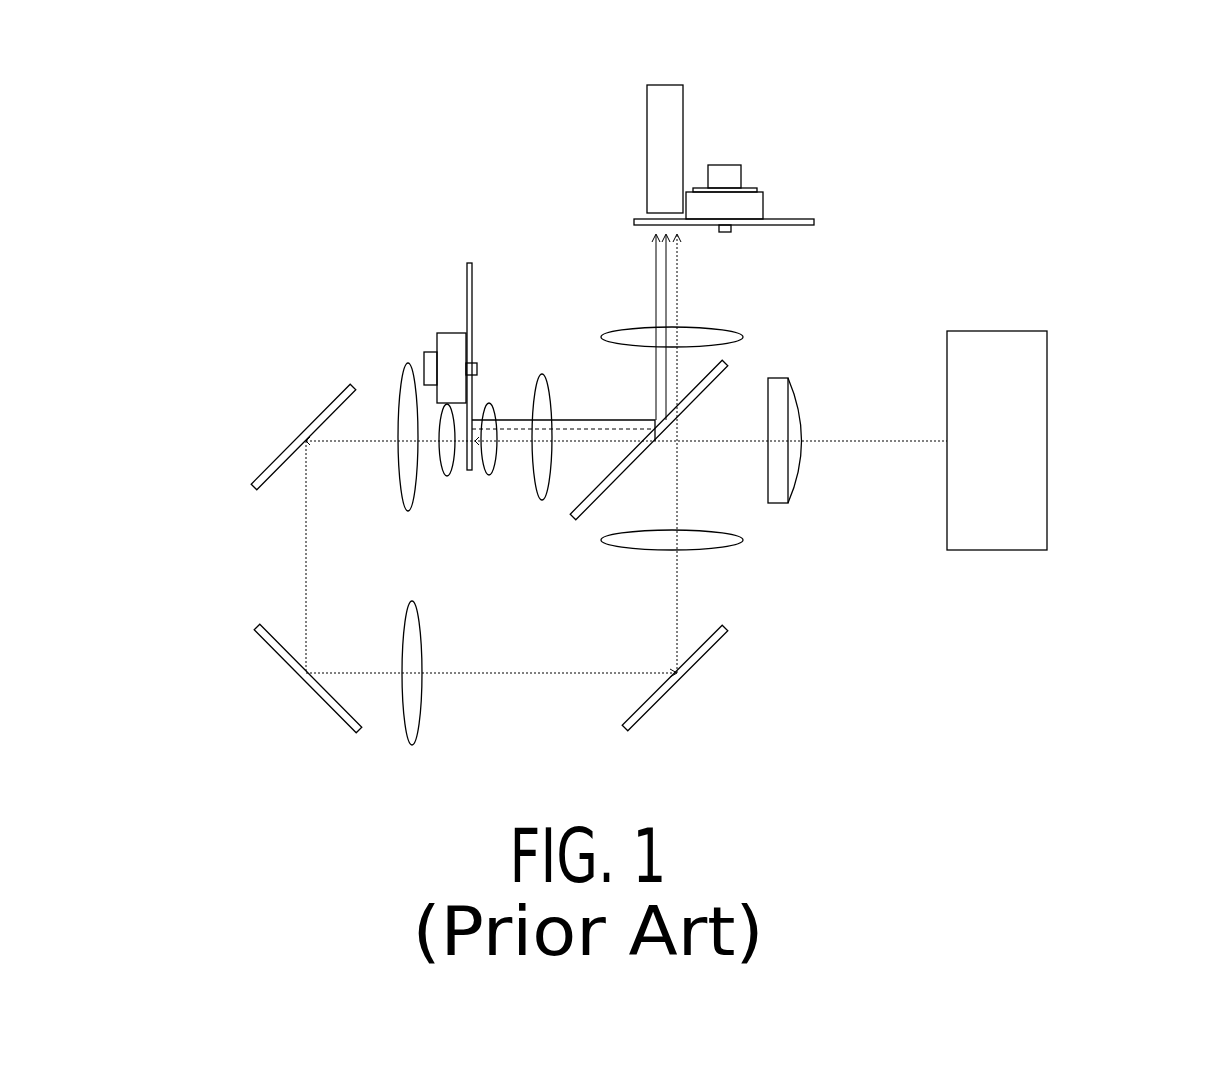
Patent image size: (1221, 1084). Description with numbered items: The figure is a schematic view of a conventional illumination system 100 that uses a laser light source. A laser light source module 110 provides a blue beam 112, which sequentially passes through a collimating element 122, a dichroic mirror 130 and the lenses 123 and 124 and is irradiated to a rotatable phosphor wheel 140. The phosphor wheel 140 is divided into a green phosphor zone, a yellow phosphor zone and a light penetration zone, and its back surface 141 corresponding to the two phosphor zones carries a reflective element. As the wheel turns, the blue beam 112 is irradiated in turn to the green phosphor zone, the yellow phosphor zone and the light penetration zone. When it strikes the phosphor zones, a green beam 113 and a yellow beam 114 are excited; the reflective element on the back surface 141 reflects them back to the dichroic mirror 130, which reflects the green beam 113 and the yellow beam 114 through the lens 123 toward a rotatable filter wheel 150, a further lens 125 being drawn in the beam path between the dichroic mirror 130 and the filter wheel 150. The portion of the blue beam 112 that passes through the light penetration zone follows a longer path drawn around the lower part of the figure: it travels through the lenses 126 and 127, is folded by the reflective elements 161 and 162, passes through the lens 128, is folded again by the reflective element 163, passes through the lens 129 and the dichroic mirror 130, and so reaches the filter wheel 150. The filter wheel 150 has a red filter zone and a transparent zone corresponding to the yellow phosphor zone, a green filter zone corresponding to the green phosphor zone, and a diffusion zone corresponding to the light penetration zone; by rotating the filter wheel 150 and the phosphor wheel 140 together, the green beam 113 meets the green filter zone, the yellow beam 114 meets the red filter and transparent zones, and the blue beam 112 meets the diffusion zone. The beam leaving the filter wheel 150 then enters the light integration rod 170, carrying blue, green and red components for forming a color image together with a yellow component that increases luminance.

The illumination system 100 is at (268, 79).
The laser light source module 110 is at (1030, 441).
The blue beam 112 is at (360, 443).
The green beam 113 is at (583, 429).
The yellow beam 114 is at (612, 420).
The collimating element 122 is at (782, 492).
The lens 123 is at (535, 388).
The lens 124 is at (488, 468).
The lens 125 is at (738, 330).
The lens 126 is at (440, 418).
The lens 127 is at (400, 408).
The lens 128 is at (412, 705).
The lens 129 is at (630, 542).
The dichroic mirror 130 is at (727, 370).
The phosphor wheel 140 is at (469, 262).
The back surface 141 is at (467, 305).
The filter wheel 150 is at (805, 222).
The reflective element 161 is at (275, 465).
The reflective element 162 is at (282, 660).
The reflective element 163 is at (697, 658).
The light integration rod 170 is at (669, 113).